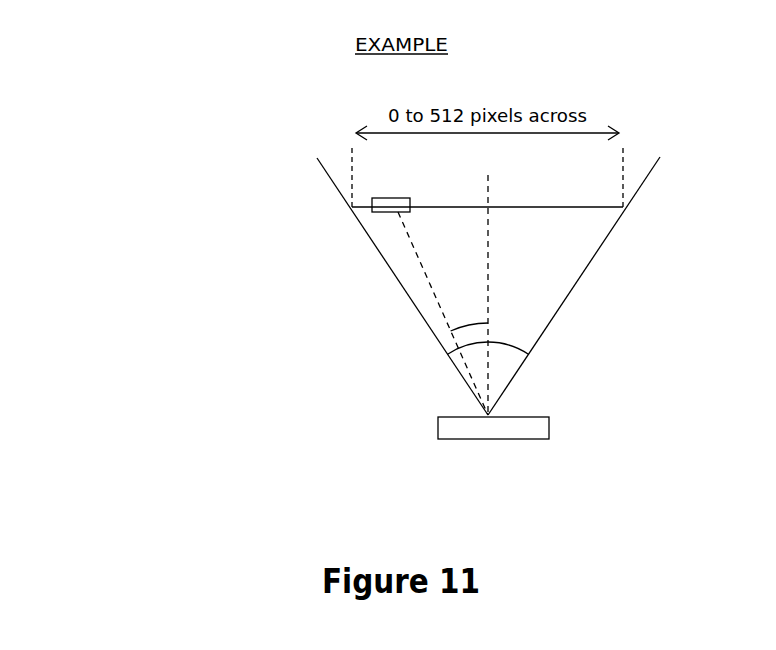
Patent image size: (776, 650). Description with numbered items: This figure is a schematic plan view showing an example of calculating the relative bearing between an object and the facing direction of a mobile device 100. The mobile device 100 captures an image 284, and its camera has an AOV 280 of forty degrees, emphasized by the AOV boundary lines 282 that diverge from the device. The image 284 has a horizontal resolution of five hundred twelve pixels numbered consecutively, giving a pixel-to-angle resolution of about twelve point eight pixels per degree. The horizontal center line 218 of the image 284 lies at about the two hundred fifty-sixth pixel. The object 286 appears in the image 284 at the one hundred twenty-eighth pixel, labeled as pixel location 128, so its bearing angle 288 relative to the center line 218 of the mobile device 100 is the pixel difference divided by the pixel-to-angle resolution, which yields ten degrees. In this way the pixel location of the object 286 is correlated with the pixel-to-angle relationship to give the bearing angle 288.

The AOV boundary lines 282 is at (329, 177).
The image 284 is at (530, 206).
The object 286 is at (395, 199).
The horizontal center line 218 is at (488, 243).
The AOV 280 is at (512, 343).
The bearing angle 288 is at (473, 312).
The mobile device 100 is at (549, 420).
The pixel location value 128 is at (372, 212).